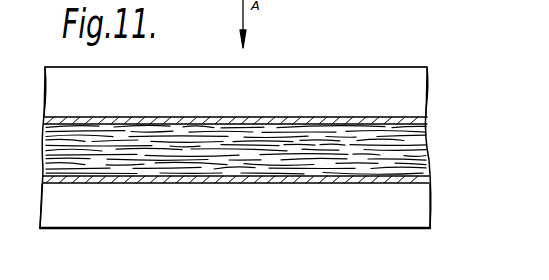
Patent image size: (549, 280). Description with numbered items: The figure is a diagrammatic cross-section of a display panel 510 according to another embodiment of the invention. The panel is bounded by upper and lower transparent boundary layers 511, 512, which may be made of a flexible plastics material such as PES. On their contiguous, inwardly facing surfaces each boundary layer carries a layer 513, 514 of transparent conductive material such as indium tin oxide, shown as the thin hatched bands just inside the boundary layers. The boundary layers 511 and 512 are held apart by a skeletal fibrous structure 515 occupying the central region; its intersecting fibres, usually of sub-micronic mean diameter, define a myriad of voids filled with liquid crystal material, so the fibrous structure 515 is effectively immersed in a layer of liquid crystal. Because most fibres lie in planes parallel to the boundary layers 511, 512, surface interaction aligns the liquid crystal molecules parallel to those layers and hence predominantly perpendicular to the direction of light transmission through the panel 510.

The display panel 510 is at (344, 61).
The upper transparent boundary layer 511 is at (413, 90).
The lower transparent boundary layer 512 is at (405, 208).
The layer of transparent conductive material 513 is at (418, 121).
The layer of transparent conductive material 514 is at (418, 177).
The skeletal fibrous structure 515 is at (410, 153).